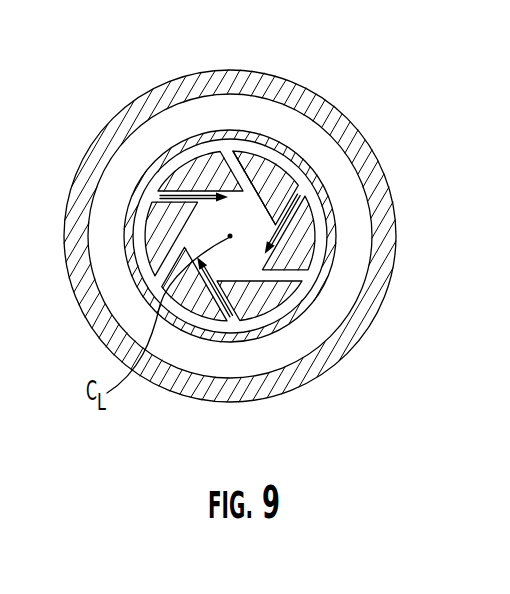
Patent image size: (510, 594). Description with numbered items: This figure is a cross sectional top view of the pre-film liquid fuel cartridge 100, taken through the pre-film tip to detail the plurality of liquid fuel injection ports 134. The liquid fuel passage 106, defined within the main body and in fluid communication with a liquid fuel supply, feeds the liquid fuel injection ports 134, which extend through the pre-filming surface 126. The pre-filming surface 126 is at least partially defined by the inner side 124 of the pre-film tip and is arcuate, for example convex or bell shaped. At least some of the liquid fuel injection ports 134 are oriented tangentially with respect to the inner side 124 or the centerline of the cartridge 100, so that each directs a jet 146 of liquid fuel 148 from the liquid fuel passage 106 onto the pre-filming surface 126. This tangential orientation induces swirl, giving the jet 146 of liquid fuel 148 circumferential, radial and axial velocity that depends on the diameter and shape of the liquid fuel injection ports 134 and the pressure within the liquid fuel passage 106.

The pre-film liquid fuel cartridge 100 is at (360, 84).
The liquid fuel passage 106 is at (320, 275).
The inner side 124 is at (275, 190).
The pre-filming surface 126 is at (185, 232).
The liquid fuel injection ports 134 is at (258, 218).
The jet of liquid fuel 146 is at (305, 283).
The liquid fuel 148 is at (307, 220).